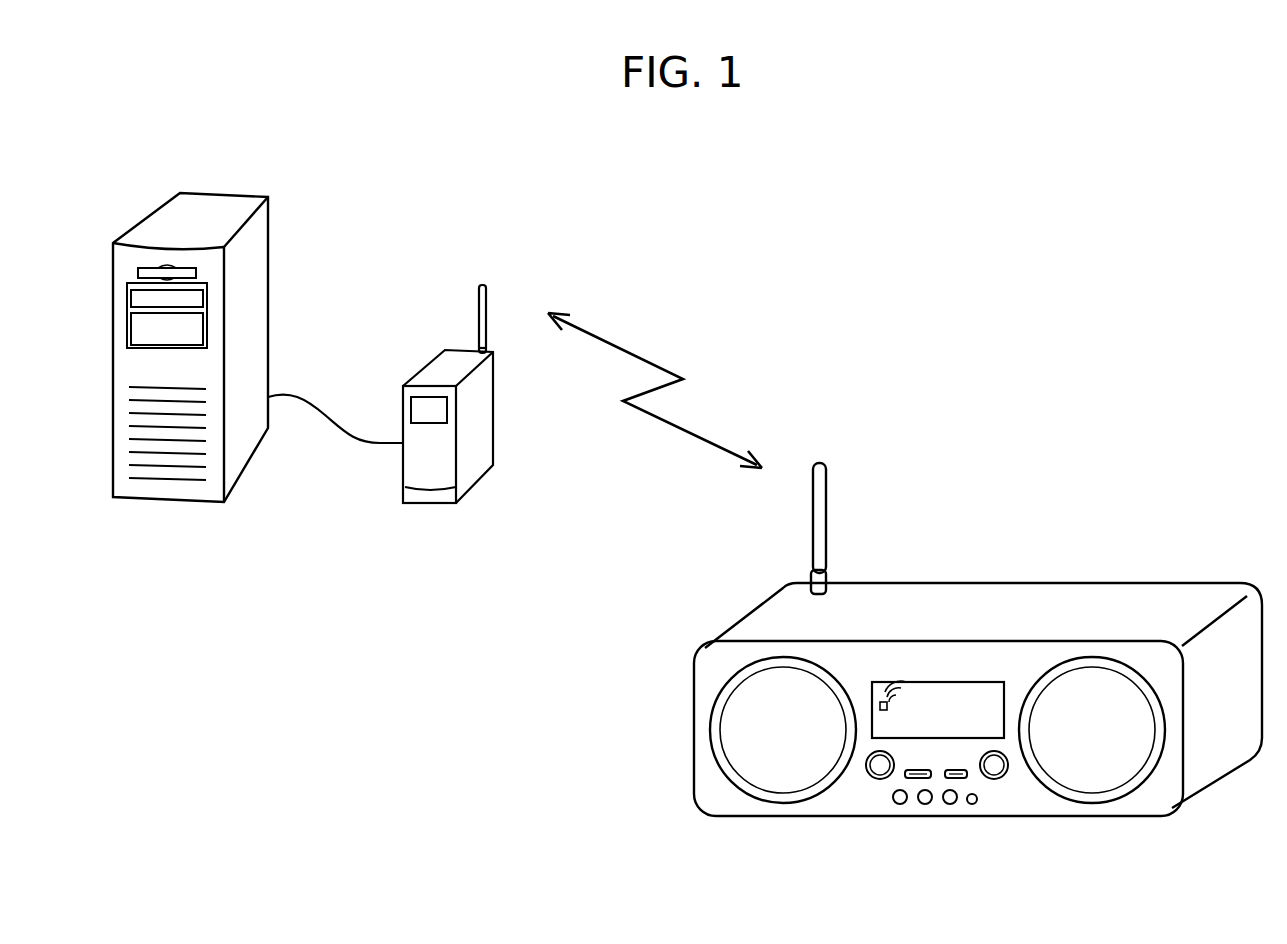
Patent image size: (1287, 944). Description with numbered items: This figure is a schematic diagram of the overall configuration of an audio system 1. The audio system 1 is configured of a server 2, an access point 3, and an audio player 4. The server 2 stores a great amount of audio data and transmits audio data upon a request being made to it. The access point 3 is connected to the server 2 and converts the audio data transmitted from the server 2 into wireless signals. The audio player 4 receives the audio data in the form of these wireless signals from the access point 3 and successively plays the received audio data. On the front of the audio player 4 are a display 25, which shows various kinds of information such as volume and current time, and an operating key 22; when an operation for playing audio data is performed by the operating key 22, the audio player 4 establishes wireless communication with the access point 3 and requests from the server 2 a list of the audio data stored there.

The audio system 1 is at (905, 252).
The server 2 is at (228, 205).
The access point 3 is at (415, 501).
The audio player 4 is at (978, 664).
The operating key 22 is at (1001, 803).
The display 25 is at (906, 681).